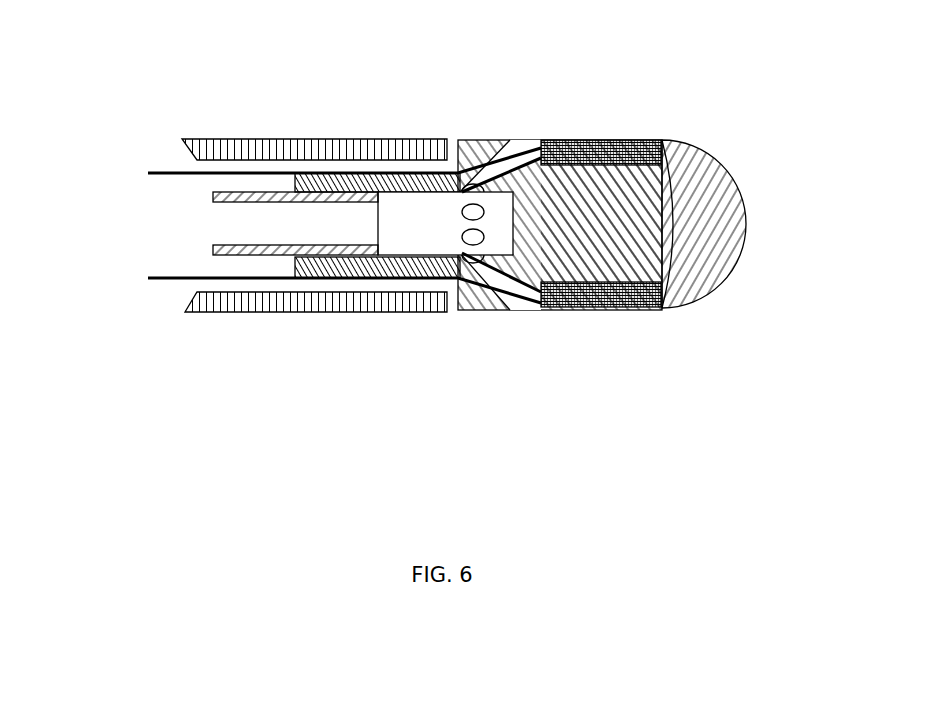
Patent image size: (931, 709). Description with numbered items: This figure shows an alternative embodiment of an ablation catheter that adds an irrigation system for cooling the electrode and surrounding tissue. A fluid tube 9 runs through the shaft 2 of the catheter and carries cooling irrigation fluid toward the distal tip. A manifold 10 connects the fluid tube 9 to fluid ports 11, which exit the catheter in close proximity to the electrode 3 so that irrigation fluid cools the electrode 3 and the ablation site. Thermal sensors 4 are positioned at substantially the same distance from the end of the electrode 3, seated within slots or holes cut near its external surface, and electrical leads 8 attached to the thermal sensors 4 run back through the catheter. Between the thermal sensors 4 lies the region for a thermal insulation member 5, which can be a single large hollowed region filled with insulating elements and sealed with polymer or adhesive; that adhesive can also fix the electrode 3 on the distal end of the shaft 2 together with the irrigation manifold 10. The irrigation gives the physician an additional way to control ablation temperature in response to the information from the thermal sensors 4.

The shaft 2 is at (265, 297).
The electrode 3 is at (705, 268).
The thermal sensors 4 is at (653, 153).
The thermal insulation member 5 is at (640, 227).
The electrical leads 8 is at (143, 178).
The fluid tube 9 is at (285, 233).
The manifold 10 is at (420, 218).
The ports 11 is at (527, 310).